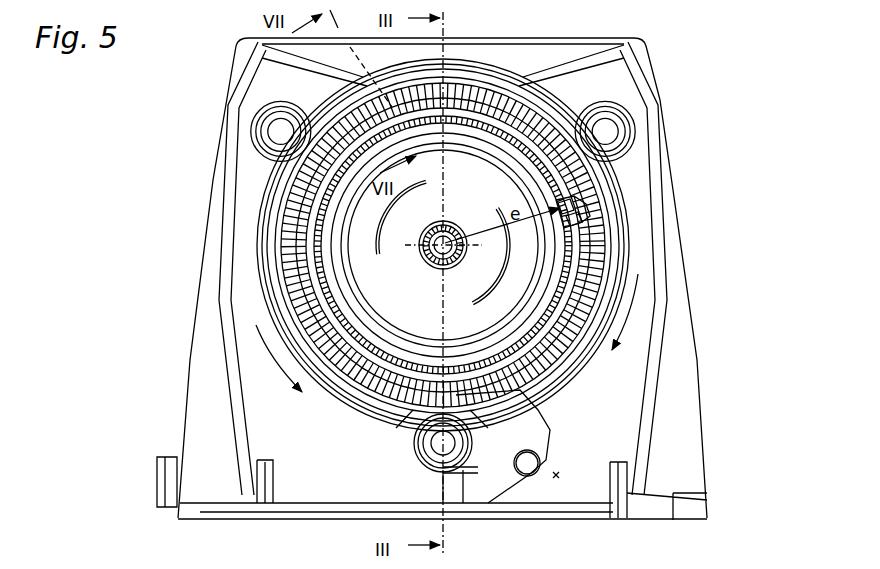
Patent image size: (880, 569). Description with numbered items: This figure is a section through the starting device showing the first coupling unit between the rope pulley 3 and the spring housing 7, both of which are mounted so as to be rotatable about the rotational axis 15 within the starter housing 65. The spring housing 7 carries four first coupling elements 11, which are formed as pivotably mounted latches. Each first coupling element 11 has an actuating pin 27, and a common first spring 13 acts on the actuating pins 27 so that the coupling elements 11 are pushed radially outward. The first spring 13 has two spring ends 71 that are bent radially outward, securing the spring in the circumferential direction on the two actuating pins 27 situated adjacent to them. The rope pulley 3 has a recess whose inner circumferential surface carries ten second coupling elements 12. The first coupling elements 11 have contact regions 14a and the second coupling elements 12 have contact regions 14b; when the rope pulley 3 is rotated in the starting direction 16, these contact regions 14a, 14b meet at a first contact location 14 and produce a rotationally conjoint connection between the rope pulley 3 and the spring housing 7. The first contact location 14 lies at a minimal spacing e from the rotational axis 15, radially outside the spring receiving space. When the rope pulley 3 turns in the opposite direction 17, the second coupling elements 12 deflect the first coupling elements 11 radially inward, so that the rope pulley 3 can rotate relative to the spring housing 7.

The rope pulley 3 is at (473, 102).
The spring housing 7 is at (470, 178).
The first coupling elements 11 is at (312, 268).
The second coupling elements 12 is at (322, 280).
The first spring 13 is at (332, 204).
The first contact location 14 is at (758, 190).
The contact regions 14a is at (572, 210).
The contact regions 14b is at (563, 209).
The rotational axis 15 is at (452, 250).
The starting direction 16 is at (631, 312).
The opposite direction 17 is at (276, 358).
The actuating pin 27 is at (287, 245).
The starter housing 65 is at (655, 172).
The spring ends 71 is at (482, 352).